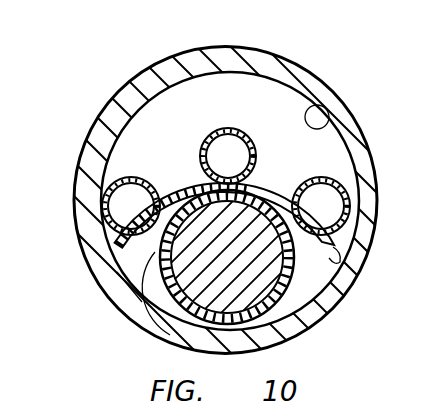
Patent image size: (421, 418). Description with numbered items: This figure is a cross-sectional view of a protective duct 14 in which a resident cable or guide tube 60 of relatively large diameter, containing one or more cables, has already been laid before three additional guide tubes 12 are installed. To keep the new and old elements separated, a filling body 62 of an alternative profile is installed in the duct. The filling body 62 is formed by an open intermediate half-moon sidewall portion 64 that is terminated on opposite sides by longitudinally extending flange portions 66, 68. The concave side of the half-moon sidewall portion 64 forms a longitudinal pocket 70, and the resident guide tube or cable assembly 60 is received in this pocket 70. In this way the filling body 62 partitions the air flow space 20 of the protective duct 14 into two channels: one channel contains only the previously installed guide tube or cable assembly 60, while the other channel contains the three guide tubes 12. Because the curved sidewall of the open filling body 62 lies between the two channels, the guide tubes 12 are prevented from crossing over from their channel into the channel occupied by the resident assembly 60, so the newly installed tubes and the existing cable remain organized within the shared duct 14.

The guide tube 12 is at (214, 131).
The protective duct 14 is at (327, 88).
The air flow space 20 is at (331, 118).
The resident cable or guide tube 60 is at (257, 284).
The filling body 62 is at (270, 184).
The intermediate half-moon sidewall portion 64 is at (184, 197).
The flange portion 66 is at (122, 270).
The flange portion 68 is at (354, 263).
The longitudinal pocket 70 is at (147, 316).